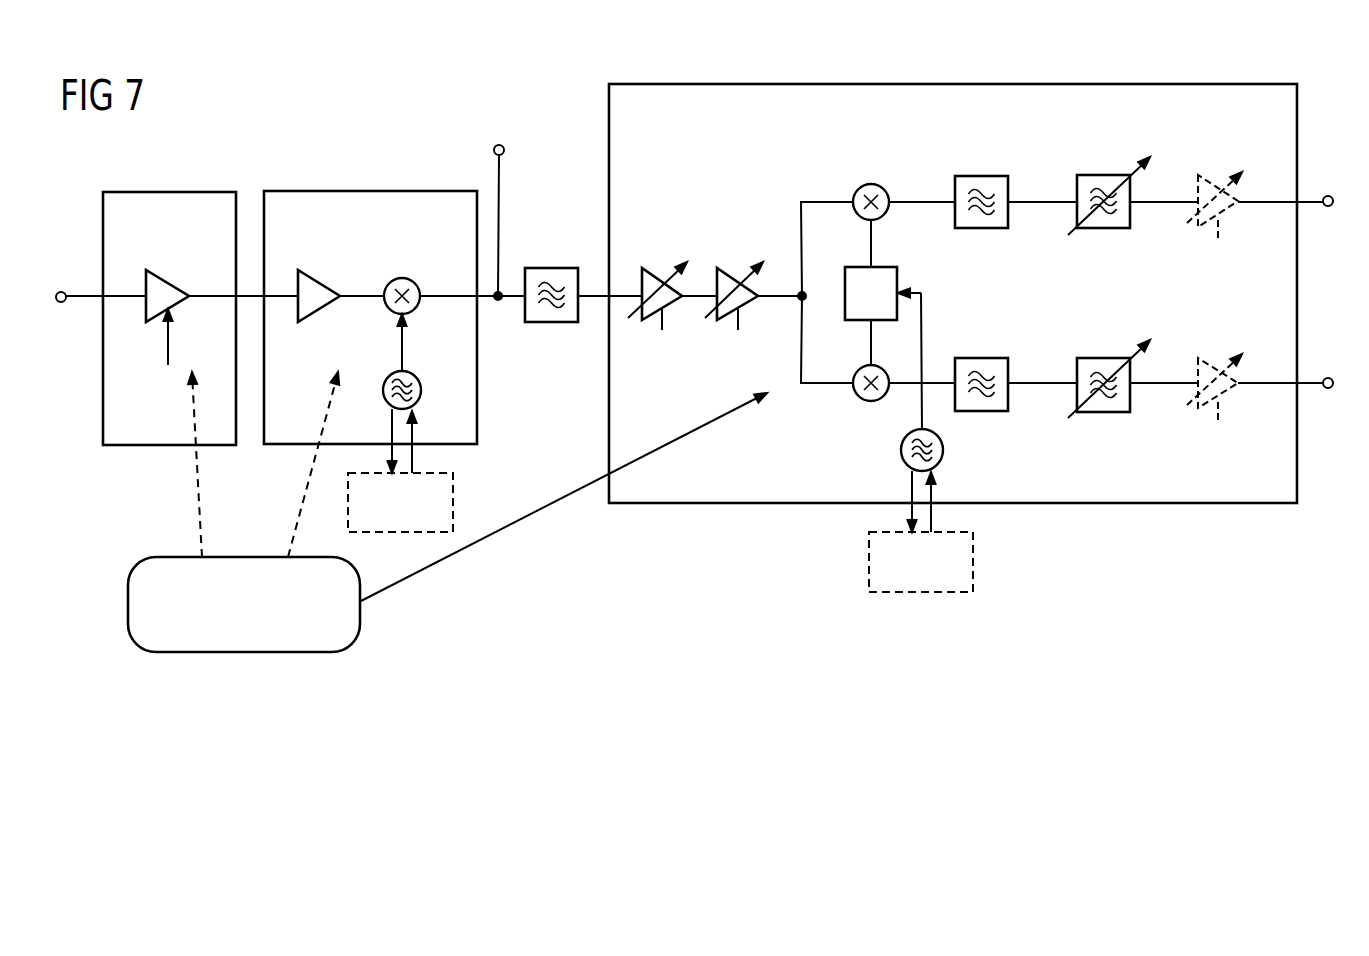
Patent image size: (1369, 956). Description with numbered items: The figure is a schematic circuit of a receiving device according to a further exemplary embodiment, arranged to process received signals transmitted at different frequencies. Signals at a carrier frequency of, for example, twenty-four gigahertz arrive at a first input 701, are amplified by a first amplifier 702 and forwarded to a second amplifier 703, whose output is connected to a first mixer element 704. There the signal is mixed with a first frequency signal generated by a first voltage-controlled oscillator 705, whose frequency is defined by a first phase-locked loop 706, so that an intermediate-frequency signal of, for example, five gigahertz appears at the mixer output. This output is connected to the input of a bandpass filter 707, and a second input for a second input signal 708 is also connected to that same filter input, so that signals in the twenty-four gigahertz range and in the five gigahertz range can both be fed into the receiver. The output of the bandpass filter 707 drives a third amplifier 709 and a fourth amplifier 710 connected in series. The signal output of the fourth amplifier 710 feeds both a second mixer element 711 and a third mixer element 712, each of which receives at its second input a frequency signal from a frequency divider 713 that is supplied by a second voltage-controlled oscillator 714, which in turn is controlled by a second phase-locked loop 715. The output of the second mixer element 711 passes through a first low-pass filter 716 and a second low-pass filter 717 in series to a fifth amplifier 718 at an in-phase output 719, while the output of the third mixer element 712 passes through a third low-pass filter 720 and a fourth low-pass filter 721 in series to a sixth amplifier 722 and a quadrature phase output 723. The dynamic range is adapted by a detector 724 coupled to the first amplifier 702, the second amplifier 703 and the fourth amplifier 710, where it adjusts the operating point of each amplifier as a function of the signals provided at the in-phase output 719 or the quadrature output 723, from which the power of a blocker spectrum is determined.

The first input 701 is at (62, 291).
The first amplifier 702 is at (190, 262).
The second amplifier 703 is at (320, 275).
The first mixer element 704 is at (403, 277).
The first voltage-controlled oscillator 705 is at (423, 376).
The first phase-locked loop 706 is at (455, 488).
The bandpass filter 707 is at (552, 268).
The second input signal 708 is at (494, 150).
The third amplifier 709 is at (670, 308).
The fourth amplifier 710 is at (746, 308).
The second mixer element 711 is at (872, 184).
The third mixer element 712 is at (859, 369).
The frequency divider 713 is at (899, 280).
The second voltage-controlled oscillator 714 is at (901, 450).
The second phase-locked loop 715 is at (975, 562).
The first low-pass filter 716 is at (982, 176).
The second low-pass filter 717 is at (1103, 175).
The fifth amplifier 718 is at (1230, 211).
The in-phase output 719 is at (1329, 195).
The third low-pass filter 720 is at (982, 358).
The fourth low-pass filter 721 is at (1103, 358).
The sixth amplifier 722 is at (1230, 393).
The quadrature phase output 723 is at (1329, 377).
The detector 724 is at (253, 654).